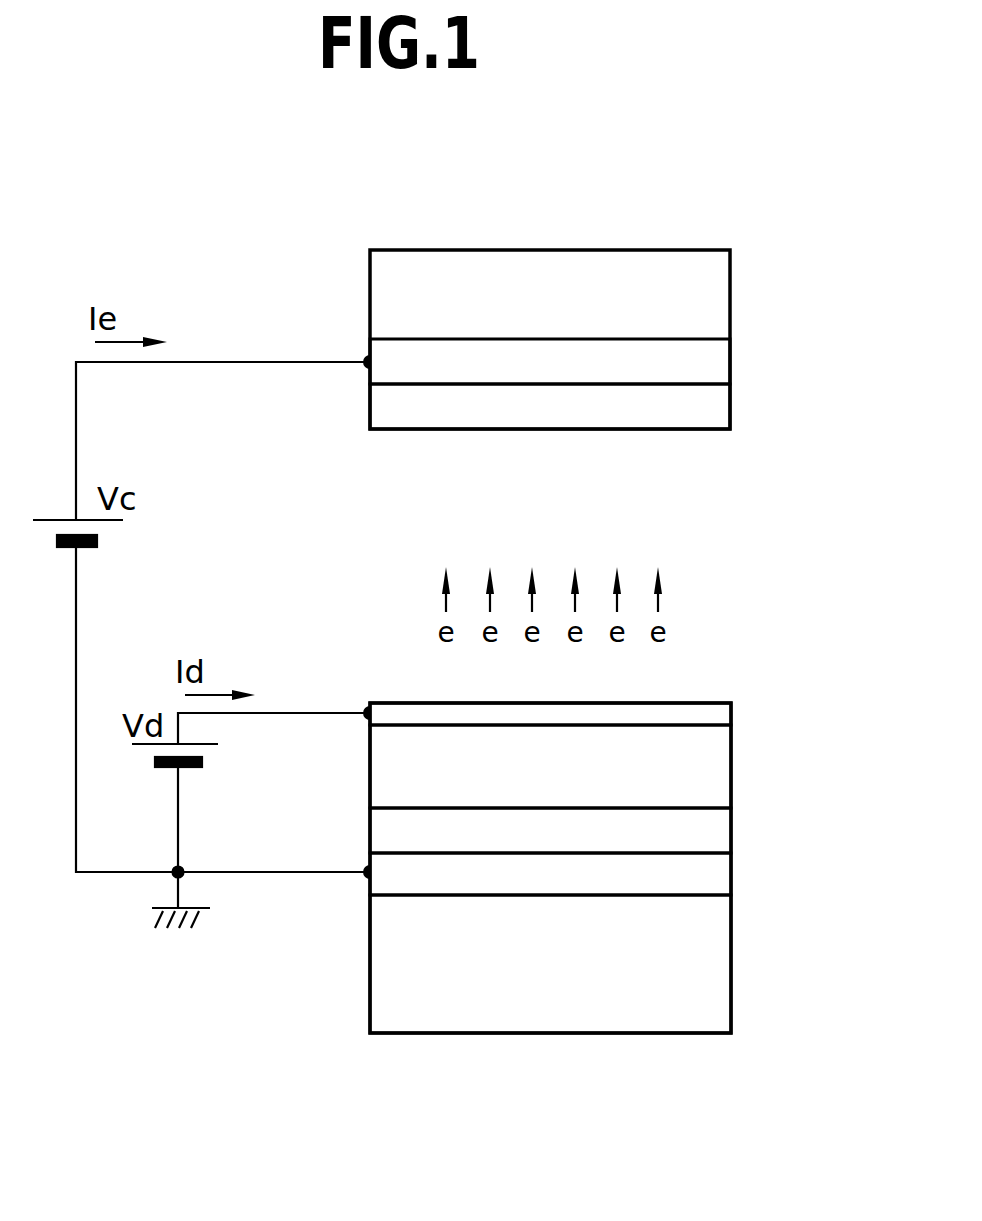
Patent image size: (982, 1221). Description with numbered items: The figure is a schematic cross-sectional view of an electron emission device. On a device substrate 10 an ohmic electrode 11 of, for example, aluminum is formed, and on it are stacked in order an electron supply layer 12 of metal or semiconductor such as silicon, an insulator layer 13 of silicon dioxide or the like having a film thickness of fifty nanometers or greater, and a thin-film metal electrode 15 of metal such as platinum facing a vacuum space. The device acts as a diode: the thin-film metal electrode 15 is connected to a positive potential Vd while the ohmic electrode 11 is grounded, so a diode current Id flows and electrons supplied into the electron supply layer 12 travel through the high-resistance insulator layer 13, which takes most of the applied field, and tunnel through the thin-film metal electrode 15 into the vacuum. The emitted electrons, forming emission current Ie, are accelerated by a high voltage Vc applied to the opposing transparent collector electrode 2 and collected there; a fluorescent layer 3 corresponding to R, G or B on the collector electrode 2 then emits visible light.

The collector electrode 2 is at (724, 355).
The fluorescent layer 3 is at (722, 403).
The thin-film metal electrode 15 is at (725, 713).
The insulator layer 13 is at (722, 780).
The electron supply layer 12 is at (723, 835).
The ohmic electrode 11 is at (722, 870).
The device substrate 10 is at (723, 972).